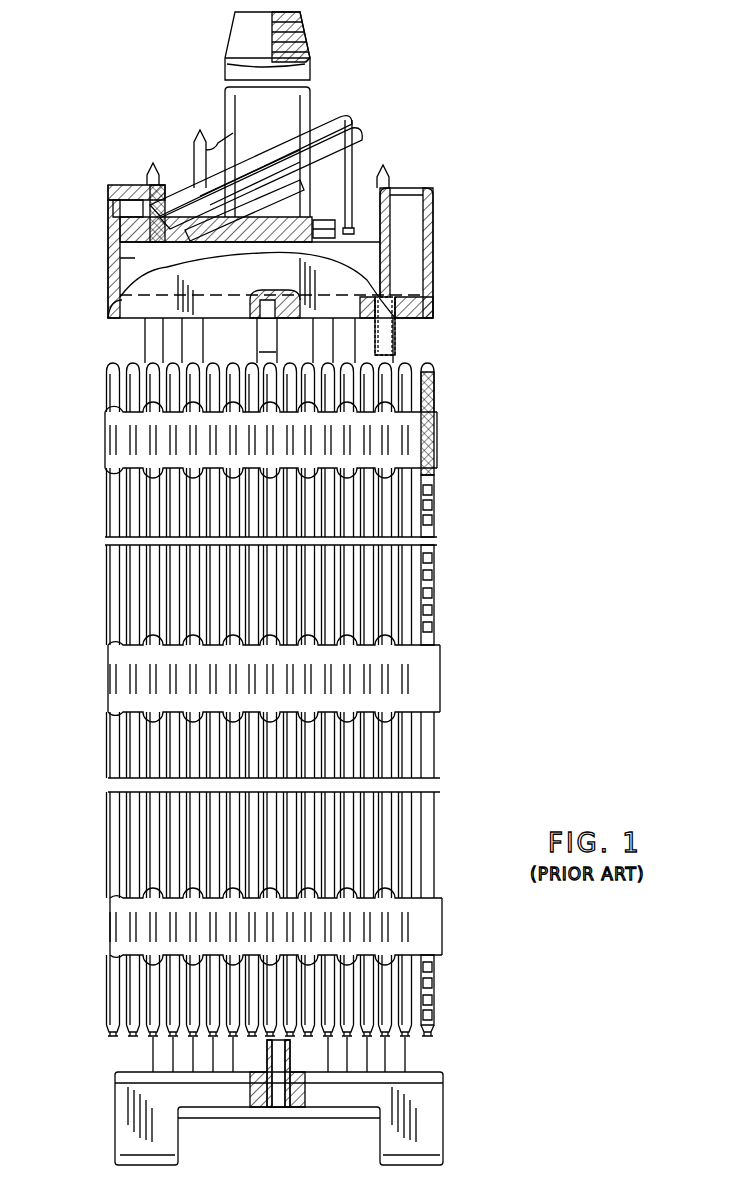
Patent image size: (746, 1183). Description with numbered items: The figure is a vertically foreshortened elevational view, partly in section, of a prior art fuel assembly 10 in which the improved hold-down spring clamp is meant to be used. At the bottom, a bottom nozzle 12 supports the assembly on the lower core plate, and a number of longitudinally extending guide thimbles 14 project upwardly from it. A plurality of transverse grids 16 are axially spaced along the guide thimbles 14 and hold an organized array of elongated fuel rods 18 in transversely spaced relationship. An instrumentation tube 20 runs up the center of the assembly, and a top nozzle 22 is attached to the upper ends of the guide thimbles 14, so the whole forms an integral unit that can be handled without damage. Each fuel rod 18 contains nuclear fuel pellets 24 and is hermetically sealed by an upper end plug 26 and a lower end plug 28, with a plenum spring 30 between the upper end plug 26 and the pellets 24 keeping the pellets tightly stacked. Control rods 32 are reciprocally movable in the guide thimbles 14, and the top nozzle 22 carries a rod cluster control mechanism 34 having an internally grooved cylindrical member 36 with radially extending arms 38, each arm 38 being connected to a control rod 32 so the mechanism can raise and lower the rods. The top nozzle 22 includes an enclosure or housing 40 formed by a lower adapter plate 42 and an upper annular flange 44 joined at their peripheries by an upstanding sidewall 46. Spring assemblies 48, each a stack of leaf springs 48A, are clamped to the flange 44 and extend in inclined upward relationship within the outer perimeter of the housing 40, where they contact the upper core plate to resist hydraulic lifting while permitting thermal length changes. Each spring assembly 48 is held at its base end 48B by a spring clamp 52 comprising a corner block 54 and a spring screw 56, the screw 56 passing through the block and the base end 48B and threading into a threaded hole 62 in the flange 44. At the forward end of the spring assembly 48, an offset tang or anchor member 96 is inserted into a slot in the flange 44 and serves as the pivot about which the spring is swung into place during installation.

The fuel assembly 10 is at (334, 588).
The bottom nozzle 12 is at (447, 1108).
The guide thimbles 14 is at (143, 338).
The transverse grids 16 is at (105, 437).
The fuel rods 18 is at (278, 706).
The instrumentation tube 20 is at (278, 1070).
The top nozzle 22 is at (273, 636).
The nuclear fuel pellets 24 is at (437, 580).
The upper end plug 26 is at (437, 373).
The lower end plug 28 is at (437, 1027).
The plenum spring 30 is at (437, 440).
The control rods 32 is at (425, 290).
The rod cluster control mechanism 34 is at (318, 100).
The internally grooved cylindrical member 36 is at (223, 102).
The radially extending arms 38 is at (183, 164).
The enclosure or housing 40 is at (433, 206).
The lower adapter plate 42 is at (398, 326).
The upper annular flange 44 is at (128, 232).
The upstanding sidewall 46 is at (118, 283).
The spring assemblies 48 is at (337, 193).
The leaf springs 48A is at (265, 178).
The base end 48B is at (182, 224).
The spring clamp 52 is at (135, 180).
The corner block 54 is at (118, 187).
The spring screw 56 is at (148, 206).
The threaded hole 62 is at (150, 245).
The offset tang or anchor member 96 is at (348, 222).